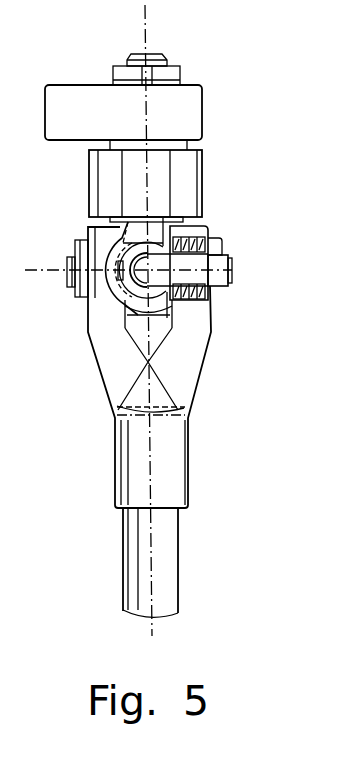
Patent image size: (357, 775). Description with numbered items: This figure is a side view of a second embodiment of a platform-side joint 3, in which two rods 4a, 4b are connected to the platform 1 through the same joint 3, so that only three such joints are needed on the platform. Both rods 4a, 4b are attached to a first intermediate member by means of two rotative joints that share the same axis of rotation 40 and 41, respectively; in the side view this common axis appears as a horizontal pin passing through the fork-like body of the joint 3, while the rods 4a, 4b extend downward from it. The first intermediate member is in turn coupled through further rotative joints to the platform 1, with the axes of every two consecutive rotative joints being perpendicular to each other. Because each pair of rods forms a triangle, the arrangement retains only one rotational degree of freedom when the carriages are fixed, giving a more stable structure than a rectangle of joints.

The platform 1 is at (87, 93).
The platform-side joint 3 is at (235, 245).
The axis of rotation 40 is at (188, 268).
The axis of rotation 41 is at (100, 268).
The rod 4a is at (130, 597).
The rod 4b is at (130, 597).